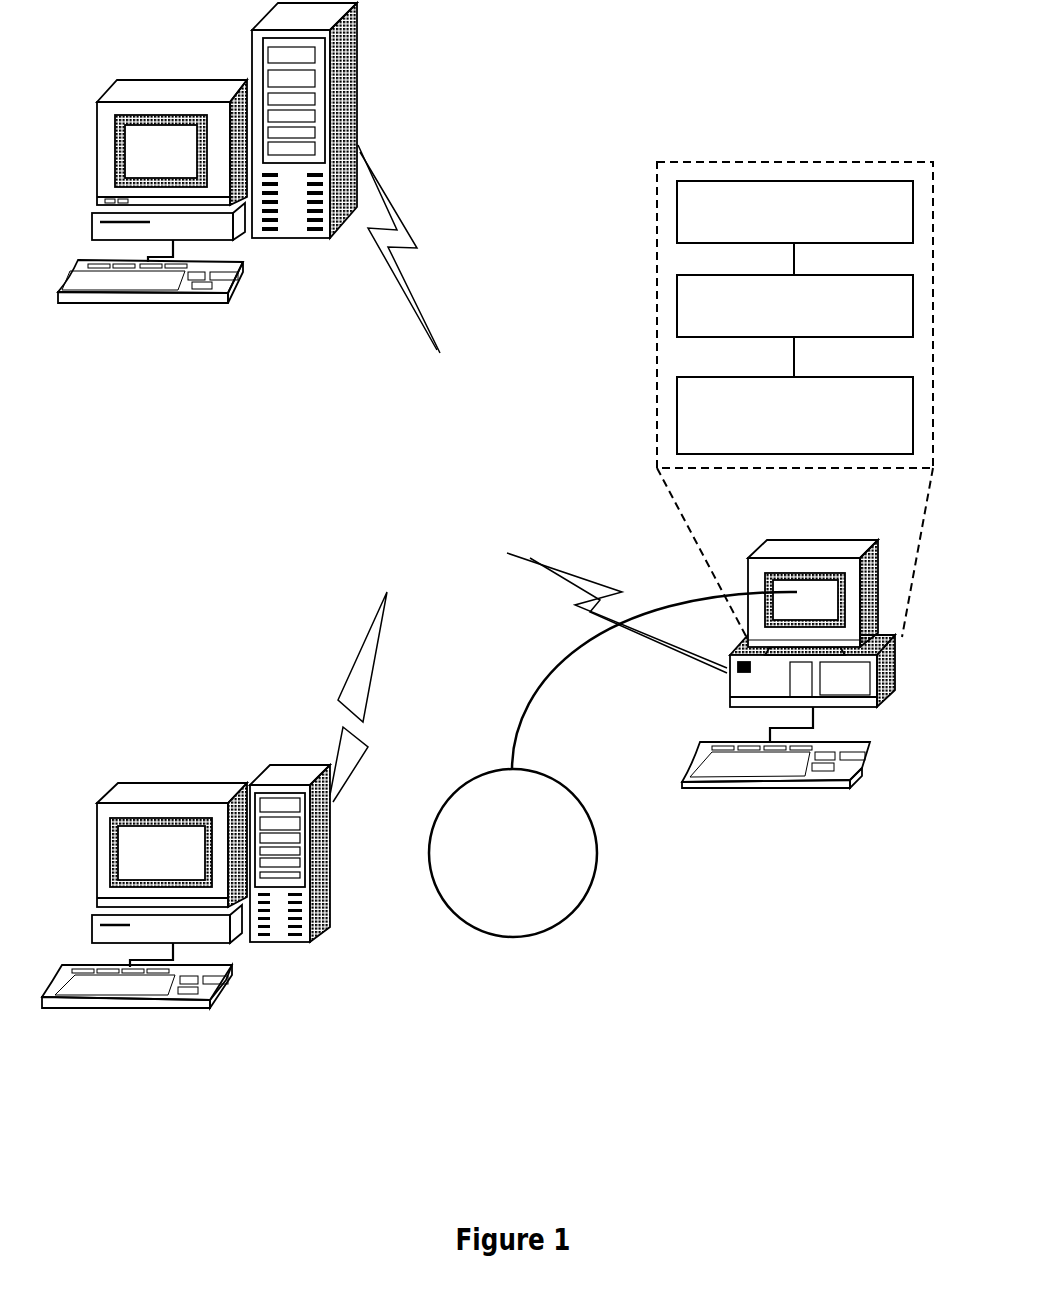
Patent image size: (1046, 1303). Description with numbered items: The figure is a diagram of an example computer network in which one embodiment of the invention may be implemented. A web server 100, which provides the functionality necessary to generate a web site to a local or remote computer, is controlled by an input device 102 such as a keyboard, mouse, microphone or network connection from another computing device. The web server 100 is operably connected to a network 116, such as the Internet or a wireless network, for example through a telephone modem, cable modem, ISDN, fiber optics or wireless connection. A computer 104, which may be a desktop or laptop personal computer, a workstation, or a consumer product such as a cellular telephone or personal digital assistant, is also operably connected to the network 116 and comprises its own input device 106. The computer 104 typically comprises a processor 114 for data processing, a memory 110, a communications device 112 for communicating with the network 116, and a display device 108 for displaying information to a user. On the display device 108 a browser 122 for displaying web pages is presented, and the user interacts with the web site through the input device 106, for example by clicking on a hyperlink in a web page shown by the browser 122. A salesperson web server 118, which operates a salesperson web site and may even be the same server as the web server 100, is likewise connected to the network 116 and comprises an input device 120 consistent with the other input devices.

The web server 100 is at (252, 783).
The input device 102 is at (175, 1010).
The computer 104 is at (855, 707).
The input device 106 is at (815, 785).
The display device 108 is at (865, 602).
The memory 110 is at (795, 212).
The communications device 112 is at (795, 415).
The processor 114 is at (795, 306).
The network 116 is at (430, 460).
The salesperson web server 118 is at (252, 80).
The input device 120 is at (186, 302).
The browser 122 is at (513, 853).